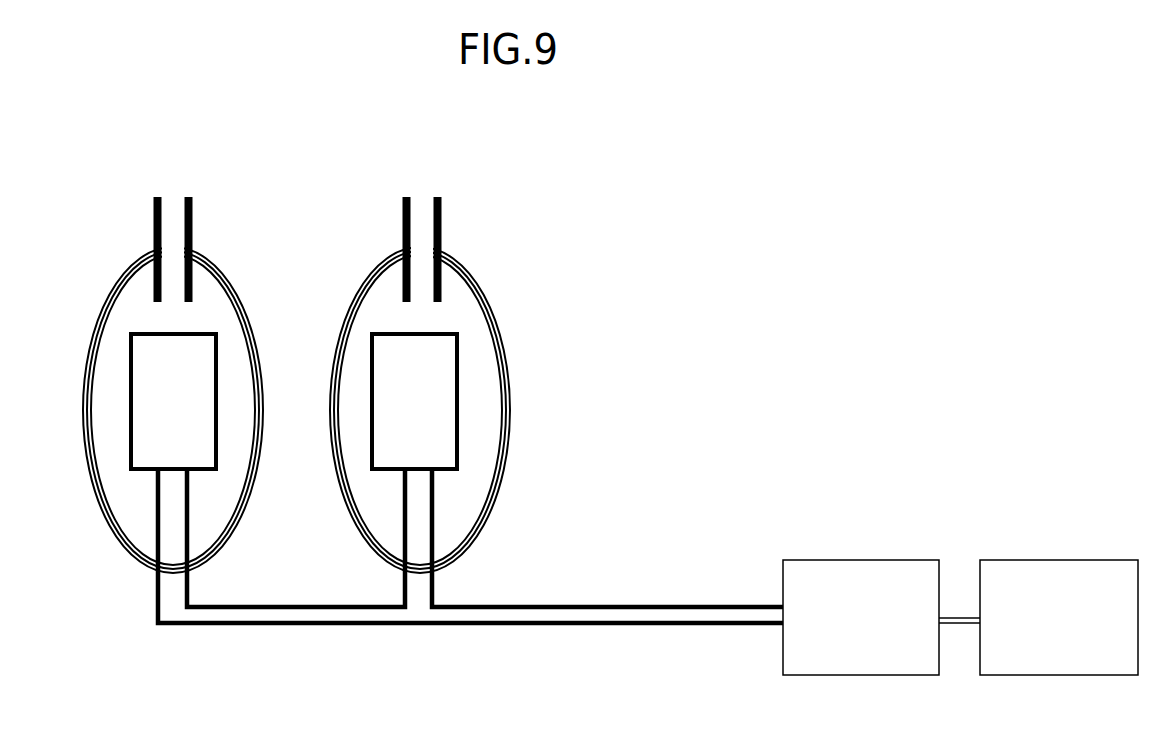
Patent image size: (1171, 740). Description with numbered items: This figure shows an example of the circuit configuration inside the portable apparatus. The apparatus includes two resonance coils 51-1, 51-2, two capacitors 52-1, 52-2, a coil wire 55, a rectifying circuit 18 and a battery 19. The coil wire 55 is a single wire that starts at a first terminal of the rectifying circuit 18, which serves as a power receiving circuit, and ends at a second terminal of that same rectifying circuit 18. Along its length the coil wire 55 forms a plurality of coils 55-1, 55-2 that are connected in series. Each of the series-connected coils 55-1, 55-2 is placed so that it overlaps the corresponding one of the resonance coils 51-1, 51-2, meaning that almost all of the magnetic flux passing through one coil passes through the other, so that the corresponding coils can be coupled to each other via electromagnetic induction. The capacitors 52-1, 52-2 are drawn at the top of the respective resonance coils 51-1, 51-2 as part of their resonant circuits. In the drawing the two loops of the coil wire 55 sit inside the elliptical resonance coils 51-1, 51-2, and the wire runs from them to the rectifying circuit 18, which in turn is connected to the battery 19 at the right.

The resonance coil 51-1 is at (250, 326).
The resonance coil 51-2 is at (497, 326).
The capacitor 52-1 is at (193, 234).
The capacitor 52-2 is at (442, 234).
The coil 55-1 is at (129, 450).
The coil 55-2 is at (371, 450).
The coil wire 55 is at (417, 626).
The rectifying circuit 18 is at (864, 560).
The battery 19 is at (1062, 560).